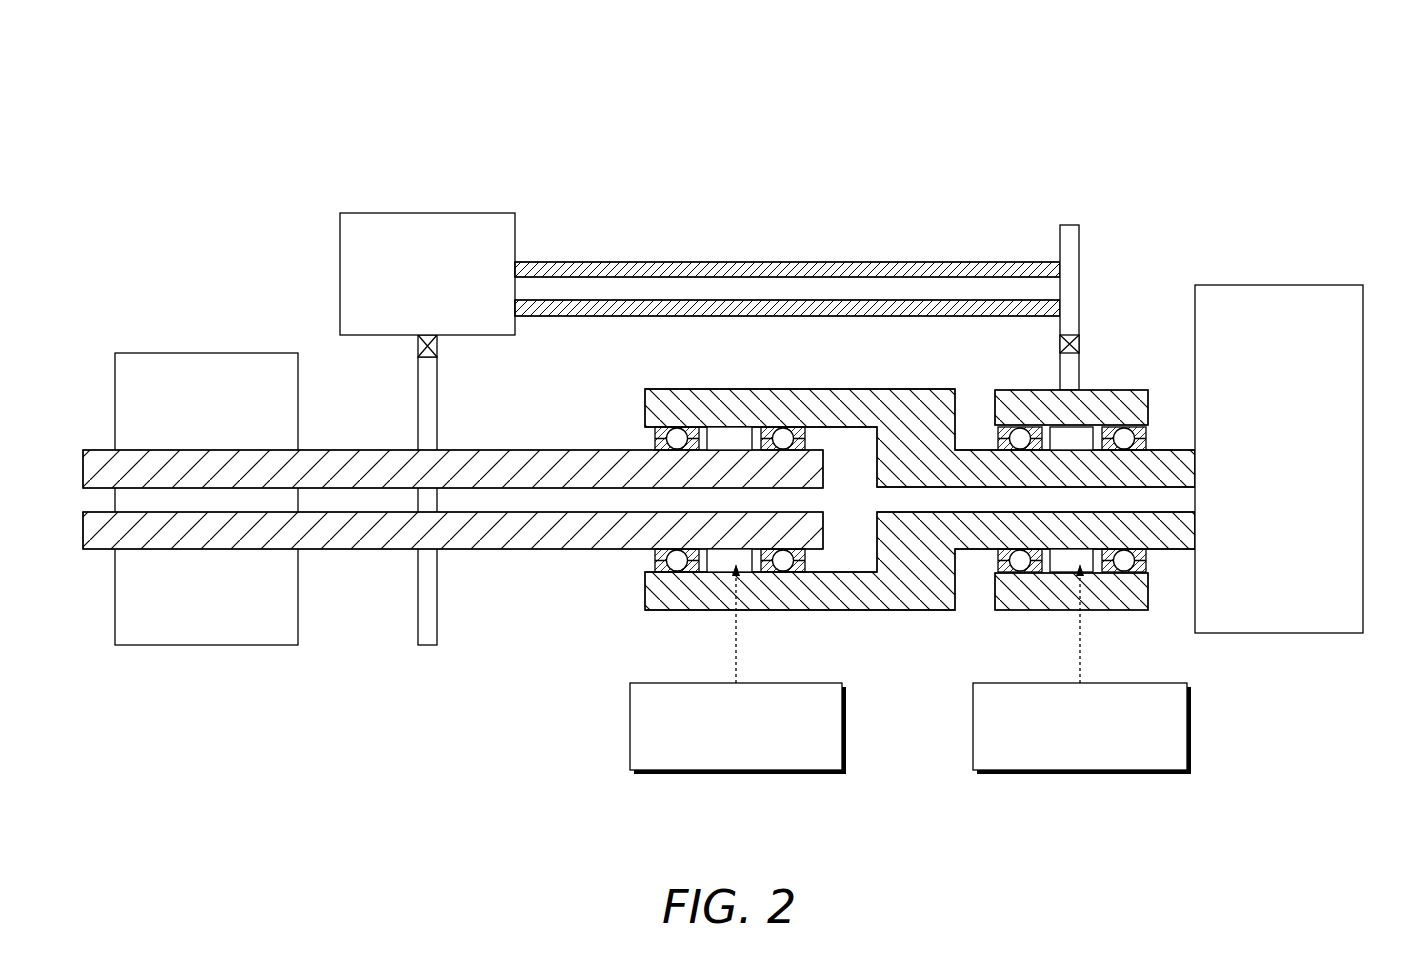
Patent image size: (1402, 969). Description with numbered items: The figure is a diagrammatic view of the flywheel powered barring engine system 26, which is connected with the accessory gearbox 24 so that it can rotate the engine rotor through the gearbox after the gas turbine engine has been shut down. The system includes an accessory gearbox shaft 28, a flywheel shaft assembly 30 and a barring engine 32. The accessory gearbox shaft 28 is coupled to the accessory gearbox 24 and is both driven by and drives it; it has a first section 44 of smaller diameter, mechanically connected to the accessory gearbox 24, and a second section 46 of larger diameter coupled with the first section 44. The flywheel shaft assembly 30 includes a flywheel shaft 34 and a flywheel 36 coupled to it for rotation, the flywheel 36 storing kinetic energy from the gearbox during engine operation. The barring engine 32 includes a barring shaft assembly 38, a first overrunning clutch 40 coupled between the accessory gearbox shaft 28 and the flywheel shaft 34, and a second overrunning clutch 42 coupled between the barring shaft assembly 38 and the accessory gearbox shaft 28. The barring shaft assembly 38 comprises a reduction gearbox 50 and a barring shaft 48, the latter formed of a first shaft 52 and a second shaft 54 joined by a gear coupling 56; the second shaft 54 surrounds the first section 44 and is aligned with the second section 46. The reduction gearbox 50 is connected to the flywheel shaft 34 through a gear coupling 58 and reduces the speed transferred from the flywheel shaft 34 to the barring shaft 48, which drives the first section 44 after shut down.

The accessory gearbox 24 is at (1363, 375).
The flywheel powered barring engine system 26 is at (182, 168).
The accessory gearbox shaft 28 is at (922, 363).
The flywheel shaft assembly 30 is at (453, 560).
The barring engine 32 is at (927, 60).
The flywheel shaft 34 is at (388, 558).
The flywheel 36 is at (207, 645).
The barring shaft assembly 38 is at (700, 215).
The first overrunning clutch 40 is at (775, 770).
The second overrunning clutch 42 is at (1117, 770).
The first section 44 is at (1163, 450).
The second section 46 is at (1038, 300).
The barring shaft 48 is at (787, 232).
The reduction gearbox 50 is at (515, 240).
The first shaft 52 is at (867, 258).
The second shaft 54 is at (1017, 385).
The gear coupling 56 is at (1079, 345).
The gear coupling 58 is at (418, 345).